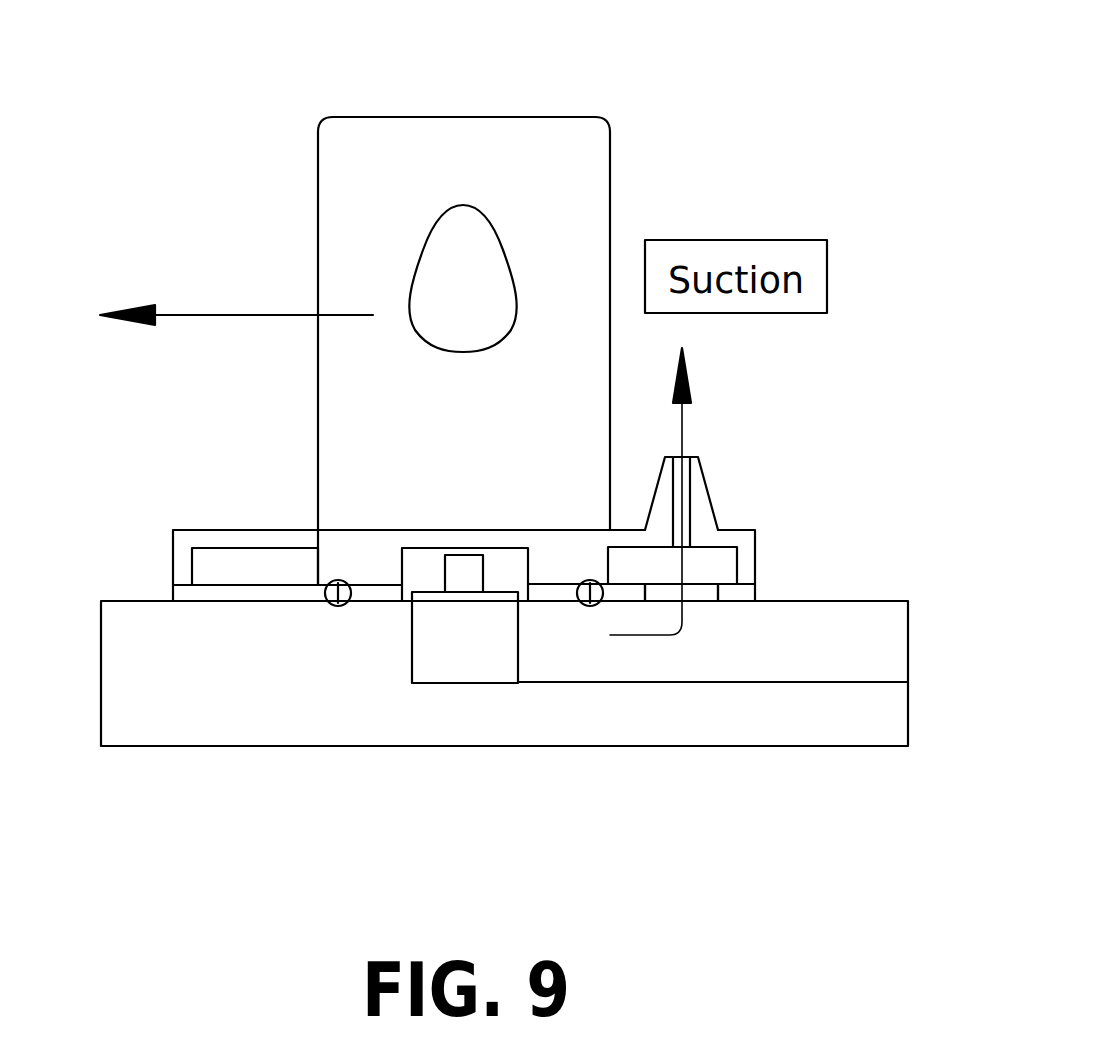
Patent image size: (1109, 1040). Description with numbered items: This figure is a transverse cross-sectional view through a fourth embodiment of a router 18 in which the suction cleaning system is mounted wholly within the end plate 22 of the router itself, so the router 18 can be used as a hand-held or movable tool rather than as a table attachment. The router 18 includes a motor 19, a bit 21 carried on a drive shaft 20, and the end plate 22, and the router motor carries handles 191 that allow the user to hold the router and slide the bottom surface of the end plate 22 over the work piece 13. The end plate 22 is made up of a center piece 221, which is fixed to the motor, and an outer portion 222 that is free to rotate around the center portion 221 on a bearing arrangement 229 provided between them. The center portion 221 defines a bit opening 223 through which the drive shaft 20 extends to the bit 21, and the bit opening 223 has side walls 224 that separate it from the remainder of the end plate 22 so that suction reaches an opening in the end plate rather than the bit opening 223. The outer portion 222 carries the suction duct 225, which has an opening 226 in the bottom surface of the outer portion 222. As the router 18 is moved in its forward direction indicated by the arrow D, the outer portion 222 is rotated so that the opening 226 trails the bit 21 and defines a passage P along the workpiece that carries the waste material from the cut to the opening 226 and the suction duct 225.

The work piece 13 is at (193, 746).
The router 18 is at (355, 205).
The motor 19 is at (483, 485).
The handles 191 is at (492, 213).
The drive shaft 20 is at (465, 563).
The bit 21 is at (465, 655).
The end plate 22 is at (227, 530).
The center piece 221 is at (375, 590).
The outer portion 222 is at (230, 590).
The bit opening 223 is at (515, 557).
The side walls 224 is at (392, 548).
The suction duct 225 is at (705, 490).
The opening 226 is at (690, 592).
The bearing arrangement 229 is at (326, 590).
The forward direction arrow D is at (283, 312).
The passage P is at (672, 636).